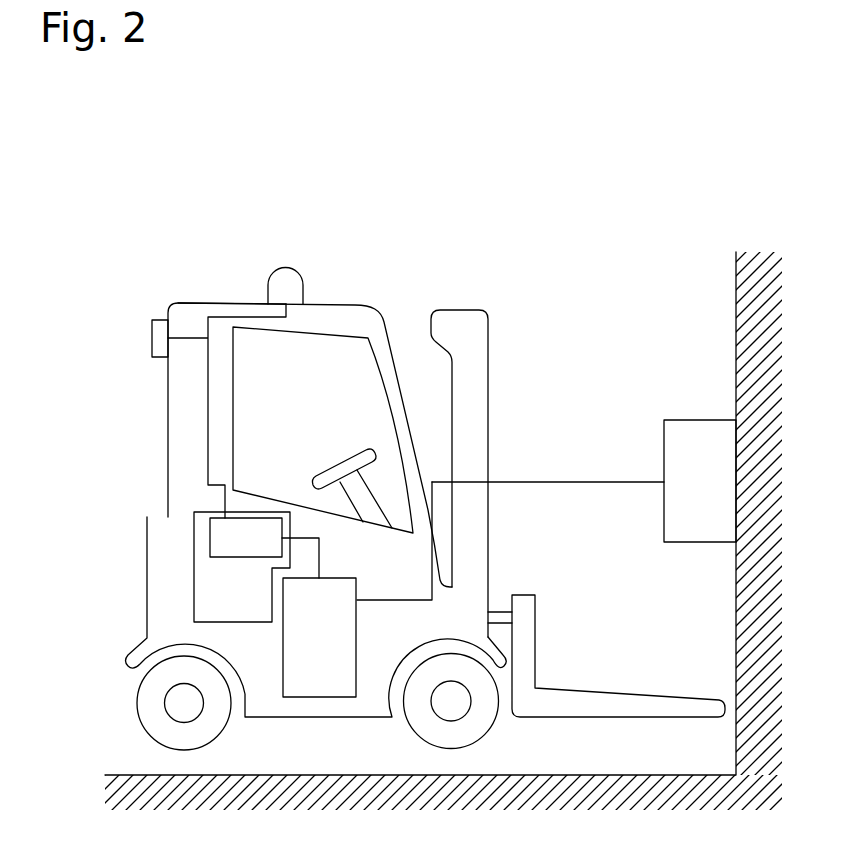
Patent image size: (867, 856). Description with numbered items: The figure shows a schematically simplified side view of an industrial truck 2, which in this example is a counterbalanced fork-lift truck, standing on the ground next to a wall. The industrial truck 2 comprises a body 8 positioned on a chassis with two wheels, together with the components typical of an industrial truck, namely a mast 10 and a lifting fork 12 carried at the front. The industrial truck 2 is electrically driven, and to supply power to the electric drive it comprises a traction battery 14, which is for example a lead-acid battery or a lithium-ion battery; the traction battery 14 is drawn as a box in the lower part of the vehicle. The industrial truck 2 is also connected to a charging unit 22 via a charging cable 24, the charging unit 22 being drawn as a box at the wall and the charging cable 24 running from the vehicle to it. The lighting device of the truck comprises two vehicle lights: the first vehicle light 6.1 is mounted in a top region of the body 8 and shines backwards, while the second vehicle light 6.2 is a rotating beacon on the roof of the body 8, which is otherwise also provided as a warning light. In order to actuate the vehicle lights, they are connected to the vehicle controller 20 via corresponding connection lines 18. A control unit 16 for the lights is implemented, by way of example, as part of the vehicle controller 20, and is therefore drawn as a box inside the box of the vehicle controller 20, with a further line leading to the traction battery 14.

The industrial truck 2 is at (480, 260).
The first vehicle light 6.1 is at (161, 330).
The second vehicle light 6.2 is at (288, 278).
The body 8 is at (167, 443).
The mast 10 is at (489, 327).
The lifting fork 12 is at (600, 693).
The traction battery 14 is at (337, 650).
The control unit 16 is at (263, 553).
The connection lines 18 is at (209, 322).
The vehicle controller 20 is at (193, 583).
The charging unit 22 is at (720, 495).
The charging cable 24 is at (541, 481).